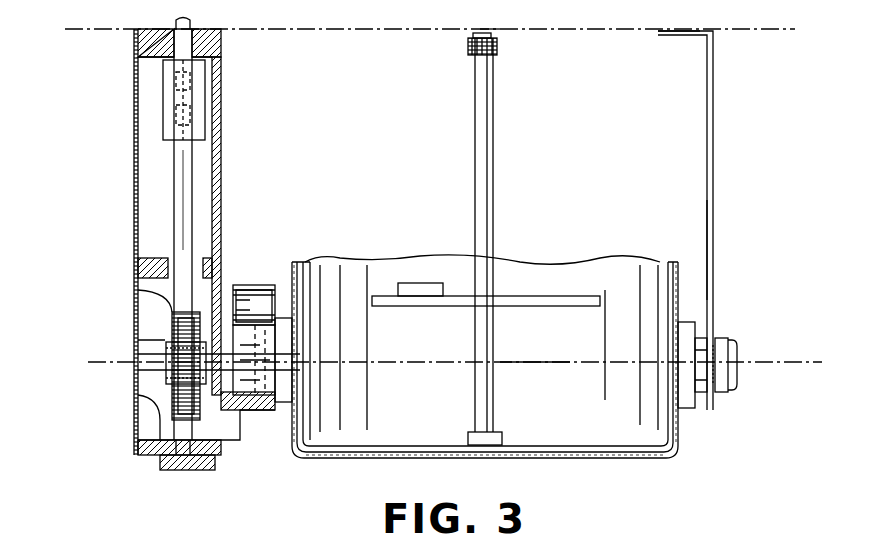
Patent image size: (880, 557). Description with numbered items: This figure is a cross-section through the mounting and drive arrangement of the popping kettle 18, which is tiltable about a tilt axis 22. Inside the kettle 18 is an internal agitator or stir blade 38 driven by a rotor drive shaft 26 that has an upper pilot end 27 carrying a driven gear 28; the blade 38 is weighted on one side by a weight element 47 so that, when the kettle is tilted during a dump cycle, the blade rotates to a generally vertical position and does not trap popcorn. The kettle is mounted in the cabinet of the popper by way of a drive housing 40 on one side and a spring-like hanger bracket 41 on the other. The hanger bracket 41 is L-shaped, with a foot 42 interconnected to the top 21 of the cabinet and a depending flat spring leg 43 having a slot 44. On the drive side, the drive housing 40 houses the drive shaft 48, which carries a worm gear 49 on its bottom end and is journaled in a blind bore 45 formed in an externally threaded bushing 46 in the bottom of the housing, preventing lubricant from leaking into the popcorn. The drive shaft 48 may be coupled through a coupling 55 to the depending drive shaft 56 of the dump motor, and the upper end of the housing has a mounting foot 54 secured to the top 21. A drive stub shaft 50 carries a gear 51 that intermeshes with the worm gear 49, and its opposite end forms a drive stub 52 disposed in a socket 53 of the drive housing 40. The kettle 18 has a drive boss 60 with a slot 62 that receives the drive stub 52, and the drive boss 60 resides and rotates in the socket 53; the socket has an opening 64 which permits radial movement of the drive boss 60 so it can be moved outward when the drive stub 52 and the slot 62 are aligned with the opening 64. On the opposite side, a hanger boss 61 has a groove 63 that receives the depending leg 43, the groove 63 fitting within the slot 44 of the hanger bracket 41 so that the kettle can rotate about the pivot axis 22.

The popping kettle 18 is at (680, 446).
The top of the cabinet 21 is at (482, 29).
The tilt axis 22 is at (535, 355).
The rotor drive shaft 26 is at (472, 105).
The upper pilot end 27 is at (493, 37).
The driven gear 28 is at (495, 50).
The stir blade 38 is at (545, 300).
The drive housing 40 is at (132, 150).
The hanger bracket 41 is at (718, 143).
The foot 42 is at (680, 38).
The flat spring leg 43 is at (717, 248).
The slot 44 is at (735, 372).
The blind bore 45 is at (190, 470).
The externally threaded bushing 46 is at (148, 448).
The weight element 47 is at (415, 283).
The drive shaft 48 is at (188, 173).
The worm gear 49 is at (165, 378).
The drive stub shaft 50 is at (148, 360).
The gear 51 is at (180, 318).
The drive stub 52 is at (252, 280).
The socket 53 is at (268, 305).
The mounting foot 54 is at (150, 42).
The coupling 55 is at (197, 97).
The depending drive shaft 56 is at (190, 28).
The drive boss 60 is at (270, 368).
The hanger boss 61 is at (738, 337).
The slot 62 is at (300, 330).
The groove 63 is at (735, 350).
The opening 64 is at (272, 285).